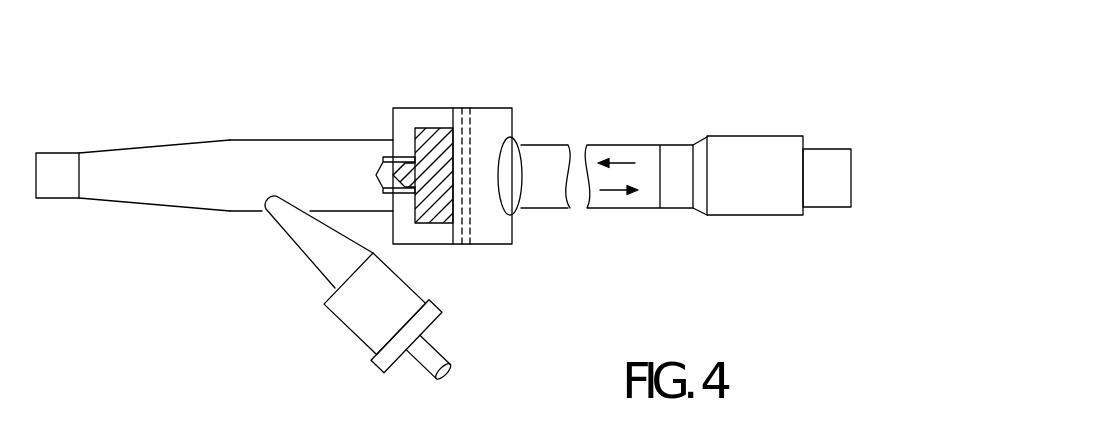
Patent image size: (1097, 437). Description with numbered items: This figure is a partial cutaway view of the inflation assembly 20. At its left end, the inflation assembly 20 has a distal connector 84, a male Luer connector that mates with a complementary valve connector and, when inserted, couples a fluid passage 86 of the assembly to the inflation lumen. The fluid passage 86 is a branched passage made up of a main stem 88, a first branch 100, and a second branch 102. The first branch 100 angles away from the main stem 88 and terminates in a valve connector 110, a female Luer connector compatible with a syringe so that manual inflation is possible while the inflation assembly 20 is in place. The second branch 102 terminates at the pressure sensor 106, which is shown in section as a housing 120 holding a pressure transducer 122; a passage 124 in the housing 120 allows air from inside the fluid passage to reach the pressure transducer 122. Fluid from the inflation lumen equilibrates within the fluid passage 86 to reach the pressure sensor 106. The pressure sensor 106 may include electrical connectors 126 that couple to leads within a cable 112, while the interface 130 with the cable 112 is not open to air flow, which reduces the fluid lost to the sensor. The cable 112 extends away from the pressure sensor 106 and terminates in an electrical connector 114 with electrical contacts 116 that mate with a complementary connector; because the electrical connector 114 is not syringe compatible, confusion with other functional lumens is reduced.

The inflation assembly 20 is at (160, 313).
The distal connector 84 is at (53, 199).
The fluid passage 86 is at (143, 148).
The main stem 88 is at (167, 205).
The first branch 100 is at (295, 248).
The second branch 102 is at (310, 140).
The pressure sensor 106 is at (393, 90).
The valve connector 110 is at (347, 327).
The cable 112 is at (550, 210).
The electrical connector 114 is at (753, 215).
The electrical contacts 116 is at (830, 148).
The housing 120 is at (428, 236).
The pressure transducer 122 is at (434, 124).
The passage 124 is at (373, 170).
The electrical connectors 126 is at (483, 113).
The interface 130 is at (465, 240).